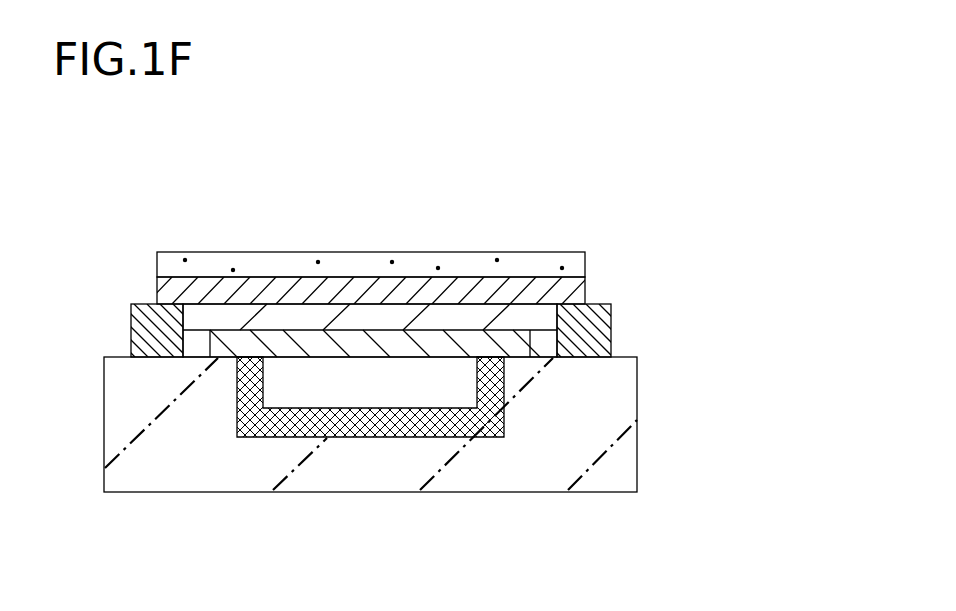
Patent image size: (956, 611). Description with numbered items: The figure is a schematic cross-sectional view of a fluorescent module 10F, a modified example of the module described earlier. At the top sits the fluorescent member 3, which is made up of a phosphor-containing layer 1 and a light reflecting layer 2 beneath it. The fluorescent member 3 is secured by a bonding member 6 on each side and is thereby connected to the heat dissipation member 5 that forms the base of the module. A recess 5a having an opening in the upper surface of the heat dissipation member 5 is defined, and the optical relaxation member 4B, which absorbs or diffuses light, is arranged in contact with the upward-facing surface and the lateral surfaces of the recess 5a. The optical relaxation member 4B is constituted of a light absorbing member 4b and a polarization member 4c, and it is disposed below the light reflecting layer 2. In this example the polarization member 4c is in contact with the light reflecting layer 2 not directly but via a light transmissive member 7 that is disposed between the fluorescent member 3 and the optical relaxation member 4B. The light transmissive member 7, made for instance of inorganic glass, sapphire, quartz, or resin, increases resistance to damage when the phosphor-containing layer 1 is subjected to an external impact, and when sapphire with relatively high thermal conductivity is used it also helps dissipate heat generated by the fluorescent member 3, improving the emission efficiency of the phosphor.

The fluorescent module 10F is at (612, 223).
The heat dissipation member 5 is at (610, 407).
The recess 5a is at (503, 377).
The bonding member 6 is at (587, 333).
The optical relaxation member 4B is at (252, 160).
The light absorbing member 4b is at (237, 410).
The polarization member 4c is at (277, 347).
The light transmissive member 7 is at (317, 313).
The fluorescent member 3 is at (463, 175).
The phosphor-containing layer 1 is at (373, 263).
The light reflecting layer 2 is at (465, 295).